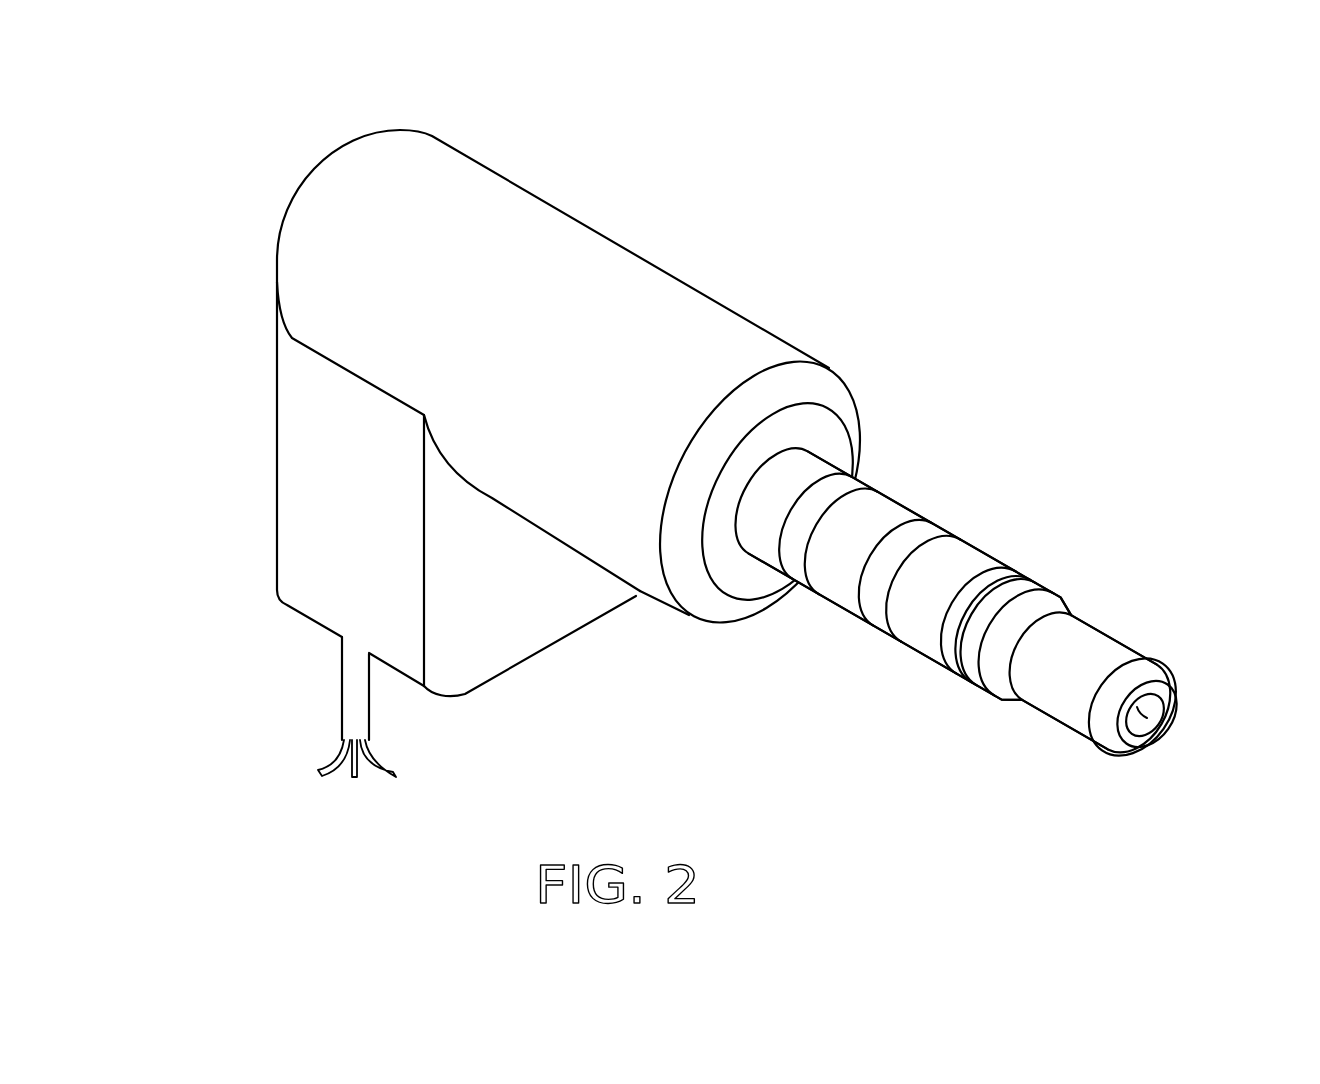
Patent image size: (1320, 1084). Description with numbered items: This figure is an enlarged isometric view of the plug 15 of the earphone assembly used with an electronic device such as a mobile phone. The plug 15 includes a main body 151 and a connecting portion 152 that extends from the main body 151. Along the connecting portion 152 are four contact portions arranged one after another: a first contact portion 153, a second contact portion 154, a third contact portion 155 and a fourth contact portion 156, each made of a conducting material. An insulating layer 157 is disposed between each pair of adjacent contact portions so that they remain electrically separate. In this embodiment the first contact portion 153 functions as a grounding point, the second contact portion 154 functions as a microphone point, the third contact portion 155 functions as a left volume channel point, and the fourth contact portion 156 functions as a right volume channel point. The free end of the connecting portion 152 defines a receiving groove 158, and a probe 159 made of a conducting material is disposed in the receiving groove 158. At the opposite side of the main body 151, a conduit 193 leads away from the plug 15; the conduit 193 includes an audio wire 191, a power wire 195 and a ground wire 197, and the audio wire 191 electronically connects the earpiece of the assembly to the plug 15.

The plug 15 is at (703, 478).
The main body 151 is at (362, 510).
The connecting portion 152 is at (999, 580).
The first contact portion 153 is at (818, 473).
The second contact portion 154 is at (882, 518).
The third contact portion 155 is at (963, 568).
The fourth contact portion 156 is at (1152, 660).
The insulating layer 157 is at (1018, 583).
The receiving groove 158 is at (1160, 707).
The probe 159 is at (1148, 720).
The audio wire 191 is at (317, 772).
The conduit 193 is at (371, 756).
The power wire 195 is at (354, 779).
The ground wire 197 is at (407, 786).